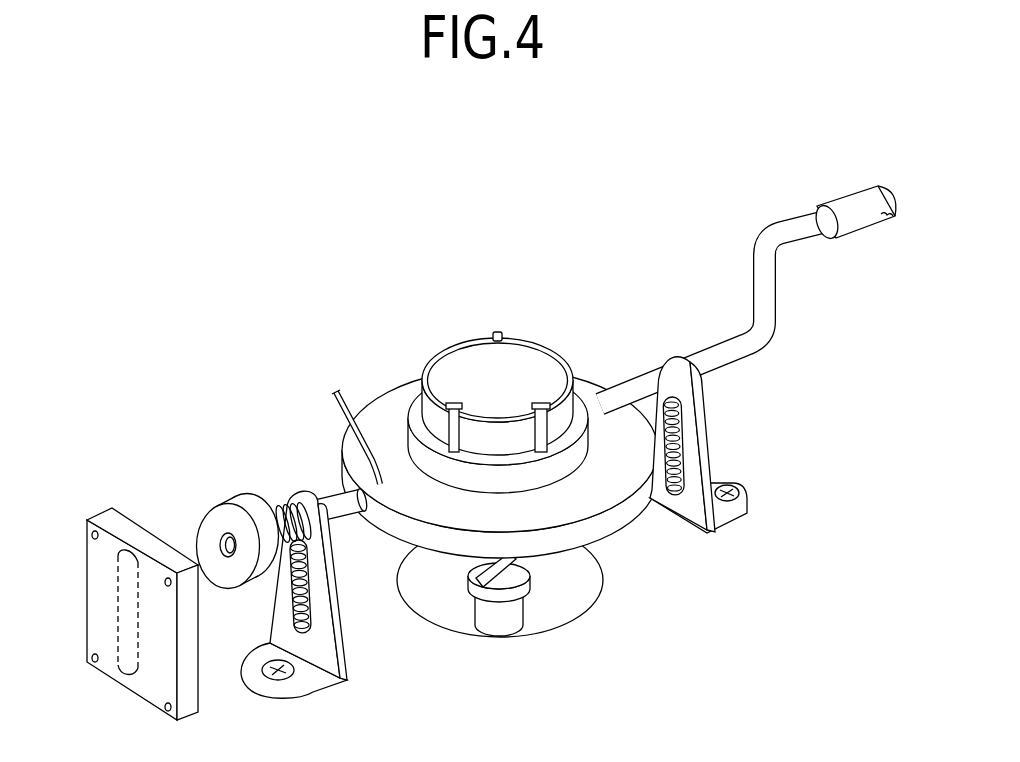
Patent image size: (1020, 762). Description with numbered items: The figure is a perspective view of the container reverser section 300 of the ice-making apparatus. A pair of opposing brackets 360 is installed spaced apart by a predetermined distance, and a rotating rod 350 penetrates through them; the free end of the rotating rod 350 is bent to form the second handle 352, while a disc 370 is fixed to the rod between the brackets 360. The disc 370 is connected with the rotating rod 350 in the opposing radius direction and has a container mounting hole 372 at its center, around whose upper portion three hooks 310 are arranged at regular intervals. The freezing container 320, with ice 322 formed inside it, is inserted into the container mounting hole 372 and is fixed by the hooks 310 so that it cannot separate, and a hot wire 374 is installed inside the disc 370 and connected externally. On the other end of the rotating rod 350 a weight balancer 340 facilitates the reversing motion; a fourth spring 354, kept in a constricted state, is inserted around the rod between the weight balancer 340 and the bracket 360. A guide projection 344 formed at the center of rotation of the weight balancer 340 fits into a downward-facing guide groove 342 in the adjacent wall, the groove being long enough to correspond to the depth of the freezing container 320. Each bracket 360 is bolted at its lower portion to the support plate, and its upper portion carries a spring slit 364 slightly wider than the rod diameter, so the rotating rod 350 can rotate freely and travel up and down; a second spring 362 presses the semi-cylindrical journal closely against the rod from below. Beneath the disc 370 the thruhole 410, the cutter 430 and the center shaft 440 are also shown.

The mixing apparatus 300 is at (398, 224).
The hook 310 is at (497, 330).
The freezing container 320 is at (491, 354).
The ice 322 is at (530, 357).
The weight balancer 340 is at (159, 512).
The guide groove 342 is at (112, 655).
The guide projection 344 is at (220, 538).
The rotating rod 350 is at (652, 387).
The second handle 352 is at (849, 192).
The spring 354 is at (283, 500).
The bracket 360 is at (767, 481).
The second spring 362 is at (680, 454).
The spring slit 364 is at (745, 504).
The disc 370 is at (388, 392).
The container mounting hole 372 is at (585, 396).
The hot wire 374 is at (350, 410).
The thruhole 410 is at (423, 608).
The cutter 430 is at (527, 573).
The center shaft 440 is at (510, 627).